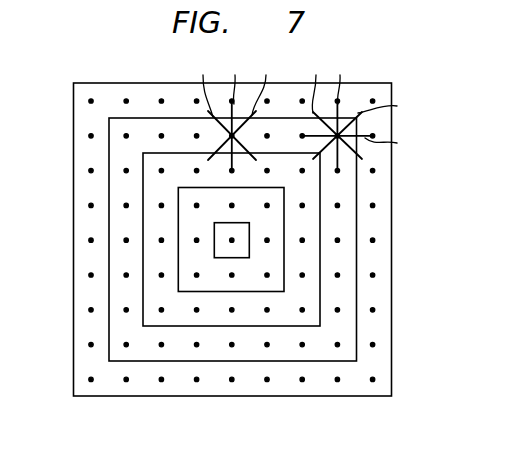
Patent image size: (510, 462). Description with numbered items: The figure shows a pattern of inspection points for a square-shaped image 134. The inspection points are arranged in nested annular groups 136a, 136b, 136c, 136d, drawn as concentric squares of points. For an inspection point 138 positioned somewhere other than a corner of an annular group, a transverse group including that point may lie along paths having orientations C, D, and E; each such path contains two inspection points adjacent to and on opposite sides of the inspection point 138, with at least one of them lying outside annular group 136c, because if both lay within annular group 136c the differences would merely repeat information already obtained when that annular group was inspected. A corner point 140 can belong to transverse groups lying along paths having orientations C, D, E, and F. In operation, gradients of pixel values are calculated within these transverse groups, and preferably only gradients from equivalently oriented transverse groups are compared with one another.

The square-shaped image 134 is at (392, 222).
The annular group 136a is at (190, 255).
The annular group 136b is at (243, 320).
The annular group 136c is at (345, 252).
The annular group 136d is at (385, 361).
The inspection point 138 is at (228, 134).
The corner point 140 is at (358, 115).